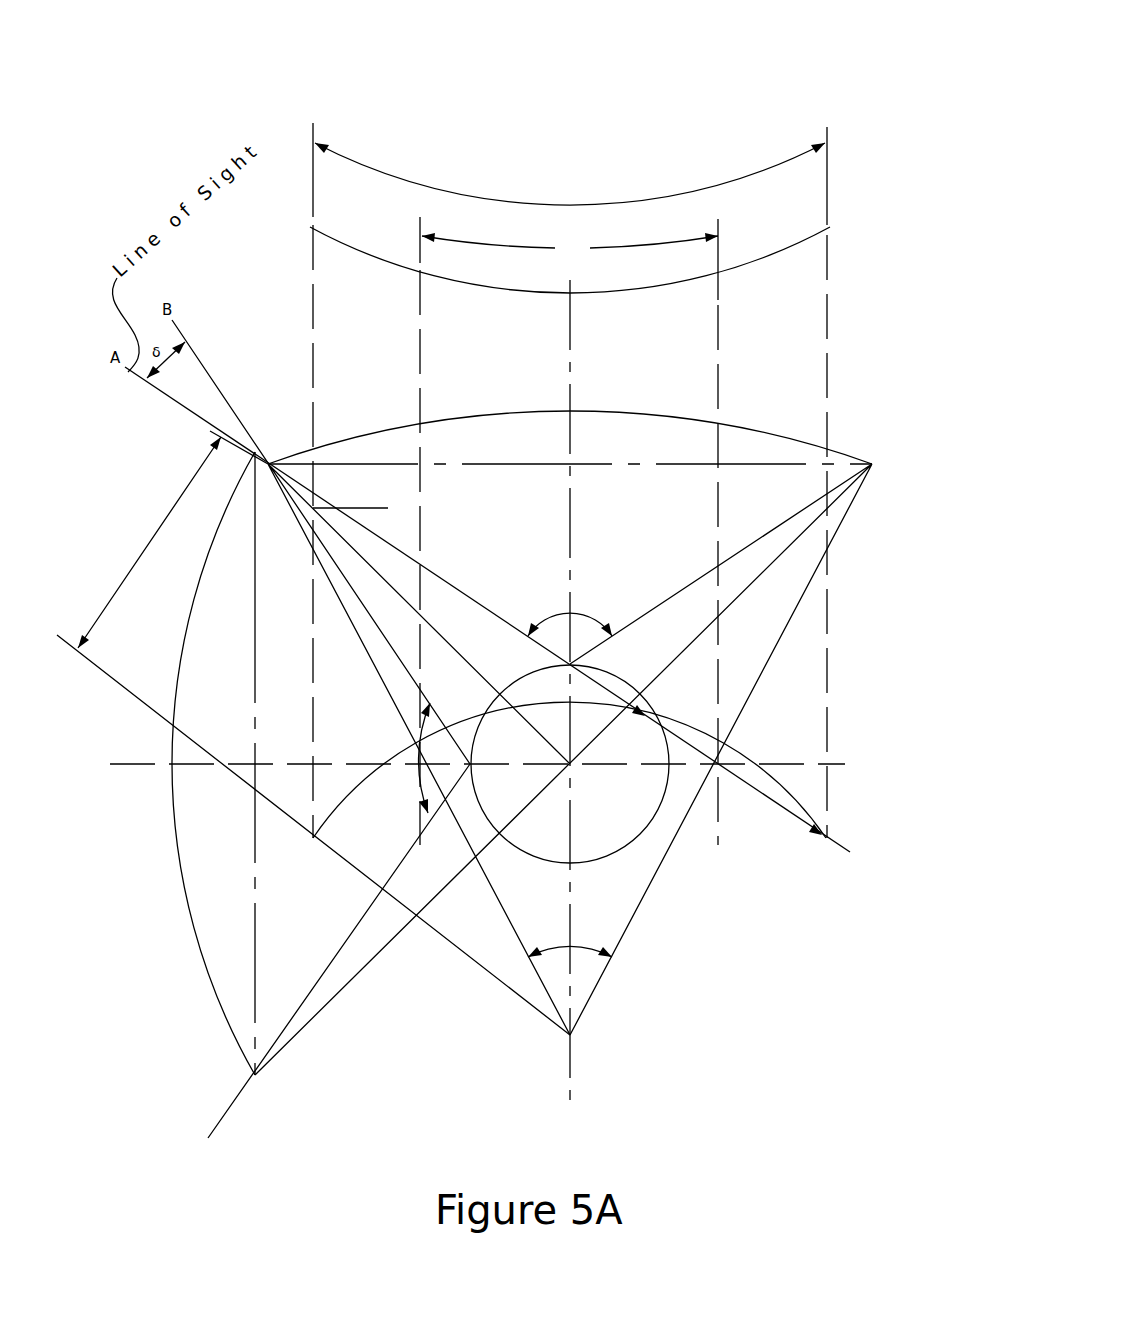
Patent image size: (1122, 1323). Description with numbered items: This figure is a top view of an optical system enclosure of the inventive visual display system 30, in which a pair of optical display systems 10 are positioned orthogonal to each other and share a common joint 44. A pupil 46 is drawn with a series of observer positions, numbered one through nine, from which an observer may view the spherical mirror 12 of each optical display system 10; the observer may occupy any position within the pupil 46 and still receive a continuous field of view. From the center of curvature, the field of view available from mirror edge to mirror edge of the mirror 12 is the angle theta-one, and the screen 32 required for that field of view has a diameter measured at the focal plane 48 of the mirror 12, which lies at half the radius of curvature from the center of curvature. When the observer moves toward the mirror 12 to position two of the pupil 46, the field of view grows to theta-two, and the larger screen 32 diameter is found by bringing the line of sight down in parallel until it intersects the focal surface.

The optical display system 10 is at (799, 362).
The mirror 12 is at (830, 449).
The visual display system 30 is at (675, 112).
The screen 32 is at (802, 250).
The common joint 44 is at (250, 462).
The pupil 46 is at (640, 833).
The focal plane 48 is at (783, 788).